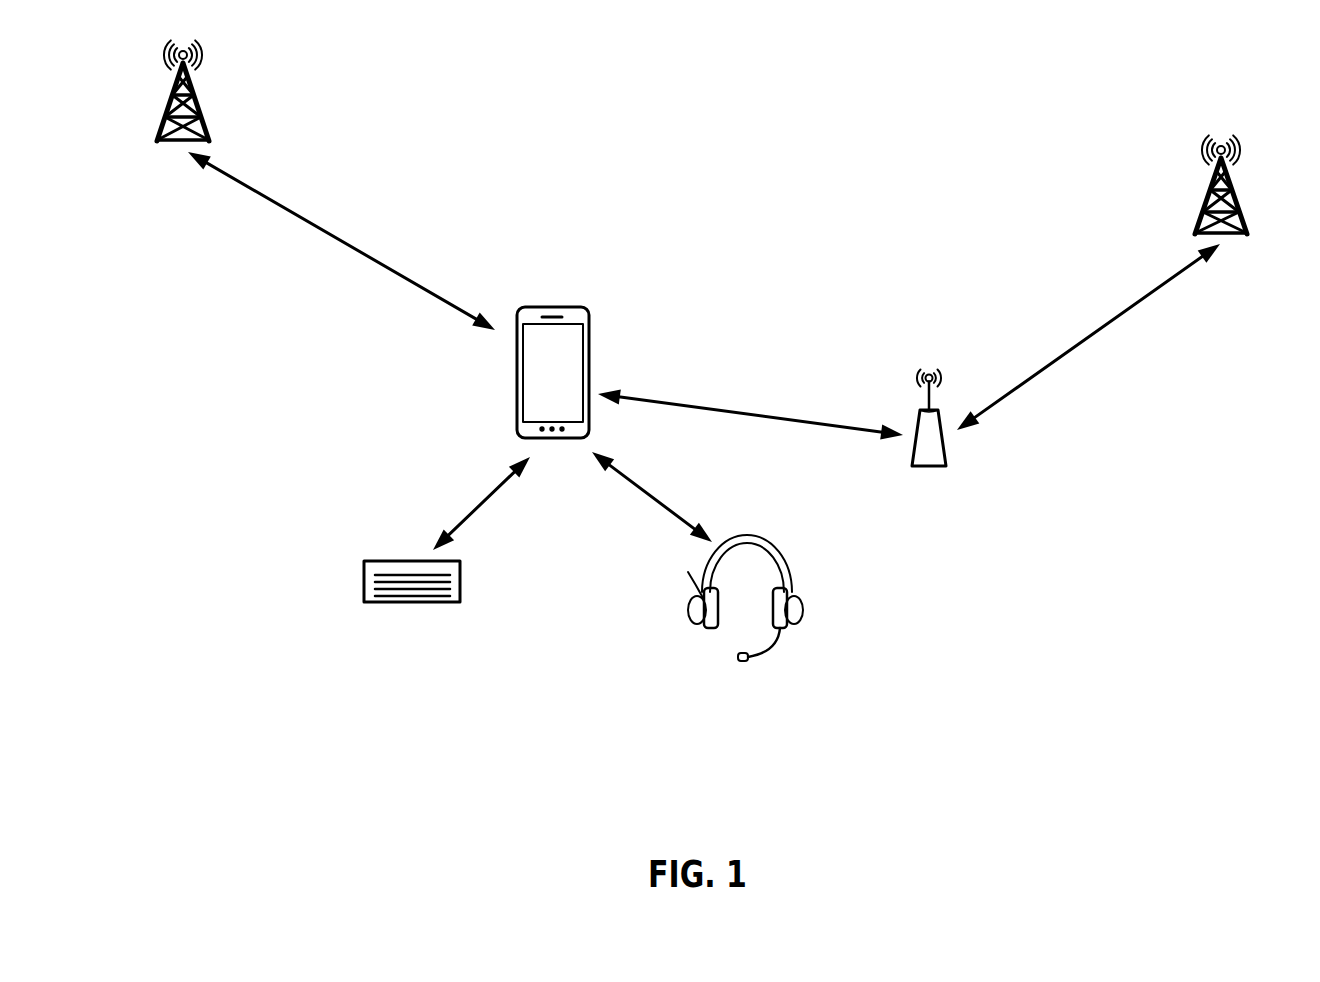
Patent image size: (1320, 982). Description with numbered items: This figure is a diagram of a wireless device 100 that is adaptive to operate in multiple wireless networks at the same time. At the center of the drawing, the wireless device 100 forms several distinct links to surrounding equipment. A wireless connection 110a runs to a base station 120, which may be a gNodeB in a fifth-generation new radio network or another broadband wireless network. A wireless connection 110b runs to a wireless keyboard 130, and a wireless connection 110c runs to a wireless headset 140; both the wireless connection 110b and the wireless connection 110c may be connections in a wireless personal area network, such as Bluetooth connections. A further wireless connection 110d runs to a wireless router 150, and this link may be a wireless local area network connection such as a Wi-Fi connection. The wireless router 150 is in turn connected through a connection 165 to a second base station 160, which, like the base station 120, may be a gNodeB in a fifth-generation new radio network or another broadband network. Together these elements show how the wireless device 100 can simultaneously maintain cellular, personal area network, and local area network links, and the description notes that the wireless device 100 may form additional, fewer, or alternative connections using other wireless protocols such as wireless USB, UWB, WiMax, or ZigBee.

The wireless device 100 is at (614, 354).
The wireless connection 110a is at (341, 241).
The wireless connection 110b is at (481, 503).
The wireless connection 110c is at (652, 497).
The wireless connection 110d is at (750, 415).
The base station 120 is at (203, 90).
The wireless keyboard 130 is at (412, 602).
The wireless headset 140 is at (745, 607).
The wireless router 150 is at (929, 436).
The base station 160 is at (1238, 184).
The connection 165 is at (1088, 337).